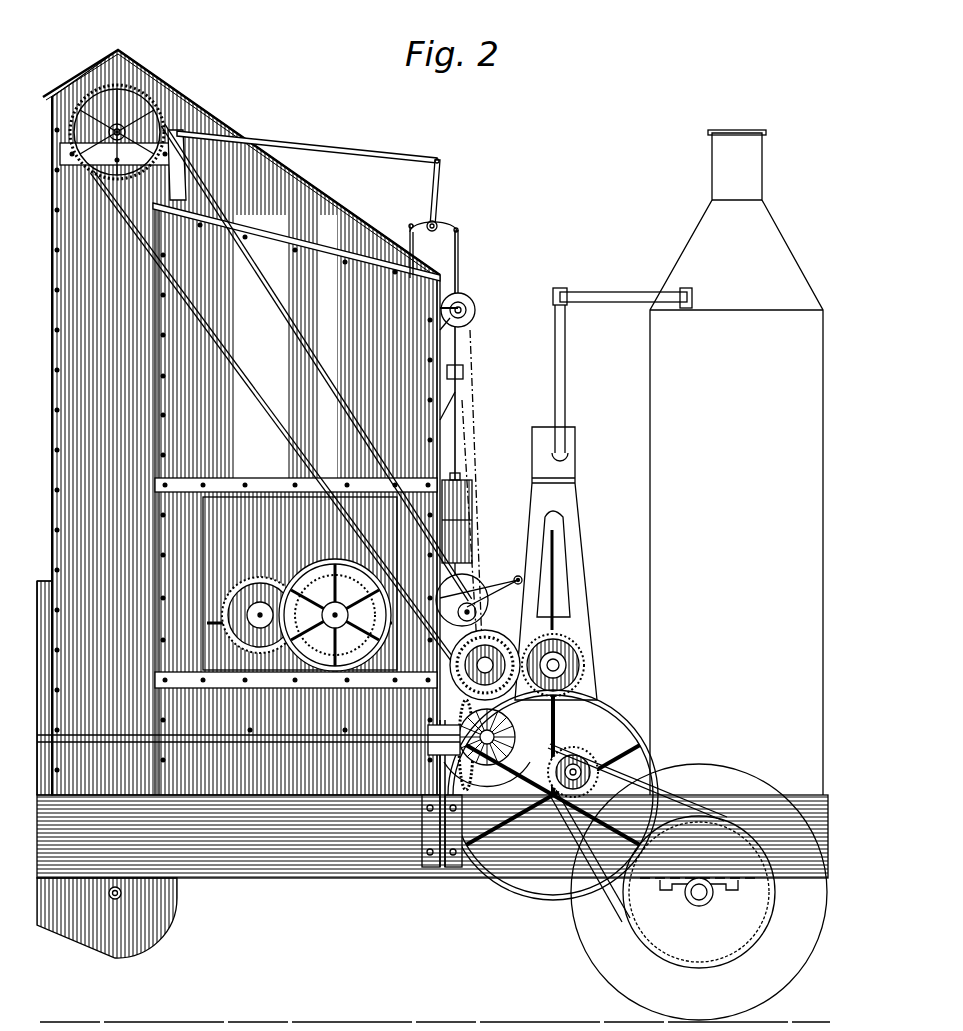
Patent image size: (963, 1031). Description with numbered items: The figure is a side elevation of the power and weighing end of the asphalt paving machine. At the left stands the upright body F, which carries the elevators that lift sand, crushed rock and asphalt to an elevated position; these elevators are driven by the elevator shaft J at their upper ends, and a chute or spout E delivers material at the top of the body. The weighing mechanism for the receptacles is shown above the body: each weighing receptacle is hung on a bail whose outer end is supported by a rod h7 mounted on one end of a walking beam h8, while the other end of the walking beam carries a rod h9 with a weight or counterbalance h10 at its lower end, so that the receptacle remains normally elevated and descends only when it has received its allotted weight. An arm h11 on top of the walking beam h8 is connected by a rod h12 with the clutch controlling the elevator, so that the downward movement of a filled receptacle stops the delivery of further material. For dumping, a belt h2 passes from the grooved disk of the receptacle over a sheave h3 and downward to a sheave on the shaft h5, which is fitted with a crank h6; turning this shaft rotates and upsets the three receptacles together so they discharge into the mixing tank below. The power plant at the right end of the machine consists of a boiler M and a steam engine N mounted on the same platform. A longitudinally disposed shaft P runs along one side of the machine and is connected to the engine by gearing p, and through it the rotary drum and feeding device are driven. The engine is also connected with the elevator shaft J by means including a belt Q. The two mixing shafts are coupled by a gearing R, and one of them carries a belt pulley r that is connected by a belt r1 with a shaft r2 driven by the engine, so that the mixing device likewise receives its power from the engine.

The upright body F is at (234, 422).
The elevator shaft J is at (150, 112).
The chute E is at (198, 247).
The rod h12 is at (352, 148).
The arm h11 is at (442, 192).
The rod h7 is at (410, 238).
The walking beam h8 is at (447, 229).
The rod h9 is at (460, 268).
The sheave h3 is at (476, 312).
The belt Q is at (337, 390).
The belt h2 is at (478, 400).
The weight or counterbalance h10 is at (466, 480).
The shaft h5 is at (471, 594).
The crank h6 is at (522, 580).
The steam engine N is at (556, 503).
The shaft r2 is at (566, 650).
The belt r1 is at (430, 675).
The gearing p is at (484, 760).
The longitudinally disposed shaft P is at (282, 740).
The gearing R is at (300, 575).
The belt pulley r is at (321, 575).
The boiler M is at (736, 462).